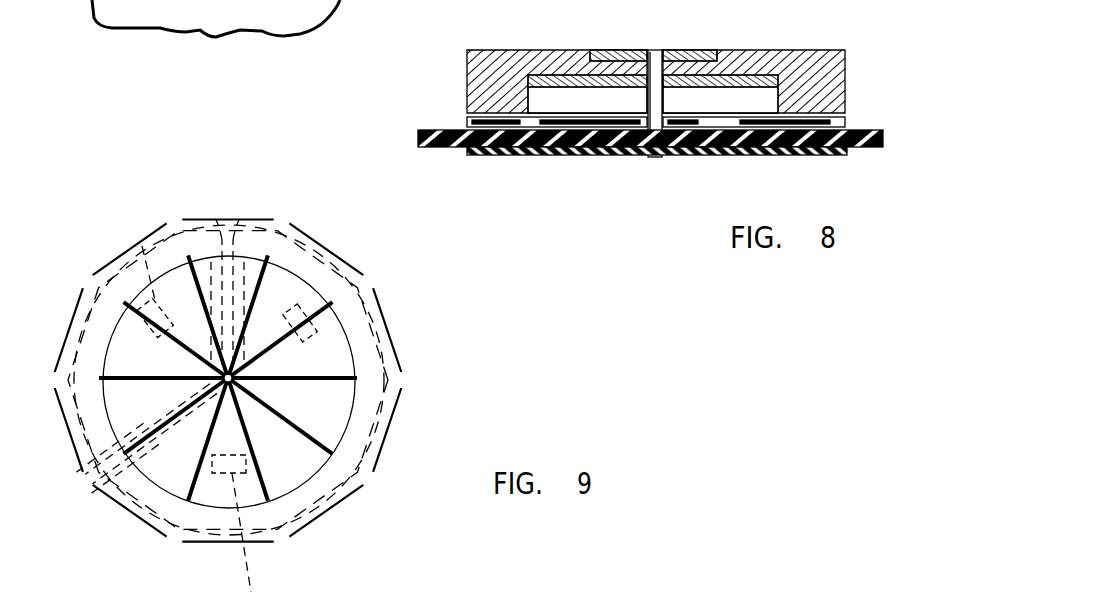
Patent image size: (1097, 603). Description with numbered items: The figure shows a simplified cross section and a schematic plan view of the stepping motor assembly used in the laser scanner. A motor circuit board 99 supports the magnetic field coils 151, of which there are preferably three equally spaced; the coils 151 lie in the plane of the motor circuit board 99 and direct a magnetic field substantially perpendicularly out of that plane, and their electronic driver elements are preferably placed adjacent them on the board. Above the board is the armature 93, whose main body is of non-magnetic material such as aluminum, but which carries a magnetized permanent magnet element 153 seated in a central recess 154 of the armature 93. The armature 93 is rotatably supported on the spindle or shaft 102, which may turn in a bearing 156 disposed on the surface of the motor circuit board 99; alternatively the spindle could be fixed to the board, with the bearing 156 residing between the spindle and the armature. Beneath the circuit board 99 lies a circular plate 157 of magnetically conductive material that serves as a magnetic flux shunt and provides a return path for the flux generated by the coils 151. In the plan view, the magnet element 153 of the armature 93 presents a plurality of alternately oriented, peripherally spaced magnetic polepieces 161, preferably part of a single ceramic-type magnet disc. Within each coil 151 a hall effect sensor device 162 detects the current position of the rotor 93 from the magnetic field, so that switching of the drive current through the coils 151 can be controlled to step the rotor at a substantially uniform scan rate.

In FIG. 8, the armature 93 is at (812, 50).
In FIG. 8, the motor circuit board 99 is at (424, 130).
In FIG. 8, the spindle or shaft 102 is at (656, 100).
In FIG. 8, the magnetic field coils 151 is at (468, 120).
In FIG. 9, the magnetic field coils 151 is at (122, 256).
In FIG. 8, the permanent magnet element 153 is at (552, 88).
In FIG. 8, the central recess 154 is at (775, 92).
In FIG. 8, the bearing 156 is at (646, 106).
In FIG. 8, the circular plate 157 is at (600, 156).
In FIG. 9, the magnetic polepieces 161 is at (362, 322).
In FIG. 9, the hall effect sensor device 162 is at (140, 244).